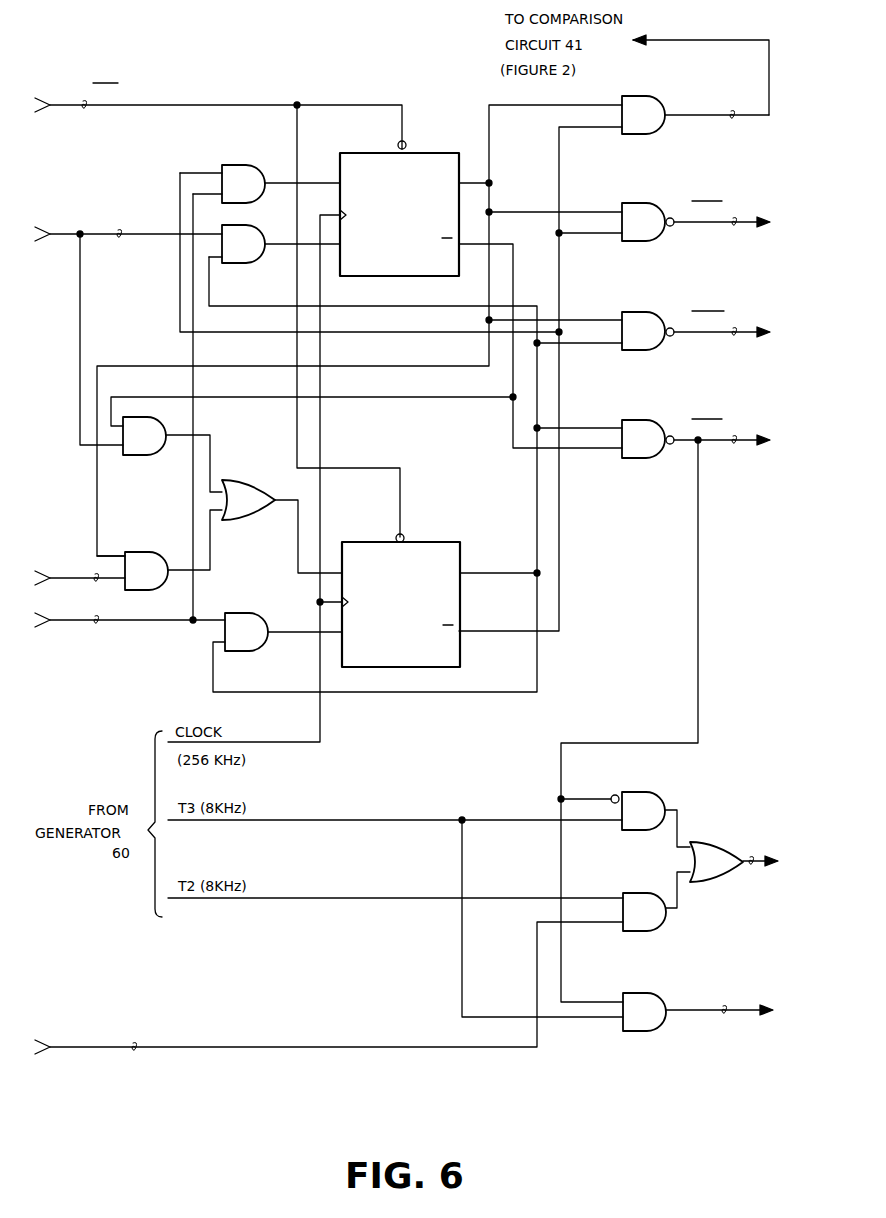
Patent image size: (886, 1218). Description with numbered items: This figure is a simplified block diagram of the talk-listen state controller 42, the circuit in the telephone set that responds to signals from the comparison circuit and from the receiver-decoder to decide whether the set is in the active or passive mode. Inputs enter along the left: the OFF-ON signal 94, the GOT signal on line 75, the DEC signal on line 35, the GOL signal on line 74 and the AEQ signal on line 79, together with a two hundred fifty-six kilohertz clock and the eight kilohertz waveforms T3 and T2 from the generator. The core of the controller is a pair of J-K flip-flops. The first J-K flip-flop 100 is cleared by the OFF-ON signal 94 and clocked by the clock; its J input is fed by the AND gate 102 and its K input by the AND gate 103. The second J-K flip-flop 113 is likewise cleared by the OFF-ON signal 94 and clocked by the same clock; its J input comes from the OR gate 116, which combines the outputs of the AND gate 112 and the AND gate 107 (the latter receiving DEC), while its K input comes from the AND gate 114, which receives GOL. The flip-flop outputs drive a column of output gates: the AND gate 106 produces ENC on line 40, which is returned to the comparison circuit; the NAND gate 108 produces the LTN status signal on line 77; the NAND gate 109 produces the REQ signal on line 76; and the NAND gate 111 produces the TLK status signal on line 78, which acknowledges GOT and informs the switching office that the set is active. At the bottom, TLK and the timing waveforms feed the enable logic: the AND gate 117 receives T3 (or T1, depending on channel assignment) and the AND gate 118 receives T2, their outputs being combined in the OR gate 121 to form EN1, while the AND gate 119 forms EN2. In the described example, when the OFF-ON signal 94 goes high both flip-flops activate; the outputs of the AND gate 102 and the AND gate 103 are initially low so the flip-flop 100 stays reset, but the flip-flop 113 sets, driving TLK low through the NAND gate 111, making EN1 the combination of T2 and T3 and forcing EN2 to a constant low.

The DEC signal line 35 is at (110, 583).
The ENC signal line 40 is at (731, 40).
The talk-listen state controller 42 is at (416, 449).
The GOL signal line 74 is at (76, 624).
The GOT signal line 75 is at (58, 238).
The REQ signal line 76 is at (702, 336).
The LTN signal line 77 is at (700, 226).
The TLK signal line 78 is at (722, 444).
The AEQ signal line 79 is at (80, 1051).
The OFF-ON signal 94 is at (68, 110).
The J-K flip-flop 100 is at (436, 154).
The AND gate 102 is at (239, 165).
The AND gate 103 is at (240, 263).
The AND gate 106 is at (640, 137).
The AND gate 107 is at (144, 550).
The NAND gate 108 is at (640, 243).
The NAND gate 109 is at (640, 353).
The NAND gate 111 is at (640, 461).
The AND gate 112 is at (140, 457).
The J-K flip-flop 113 is at (462, 548).
The AND gate 114 is at (243, 614).
The OR gate 116 is at (245, 483).
The AND gate 117 is at (640, 790).
The AND gate 118 is at (640, 934).
The AND gate 119 is at (642, 1034).
The OR gate 121 is at (710, 884).